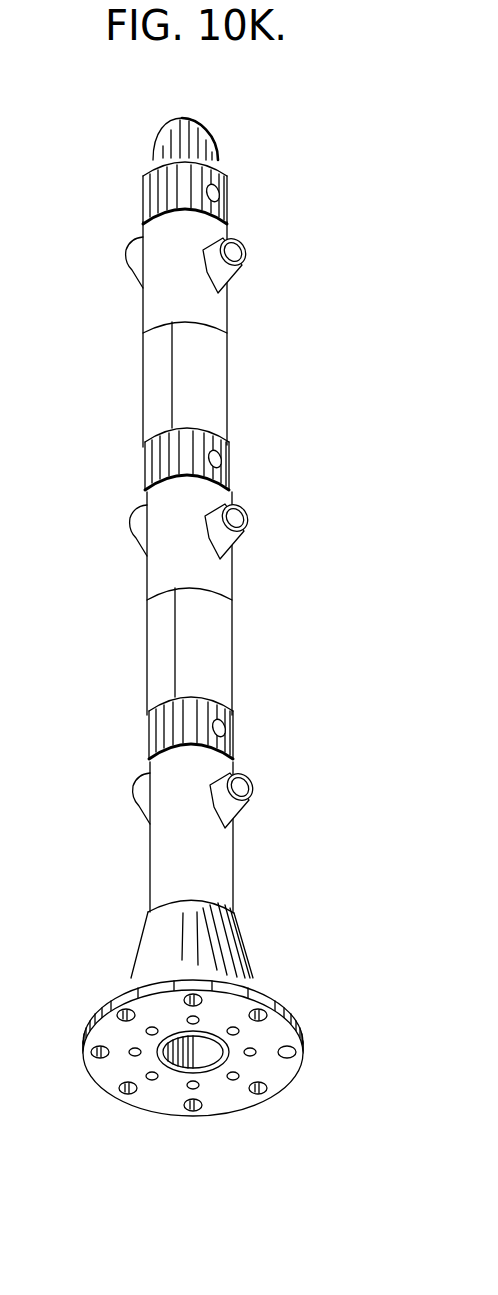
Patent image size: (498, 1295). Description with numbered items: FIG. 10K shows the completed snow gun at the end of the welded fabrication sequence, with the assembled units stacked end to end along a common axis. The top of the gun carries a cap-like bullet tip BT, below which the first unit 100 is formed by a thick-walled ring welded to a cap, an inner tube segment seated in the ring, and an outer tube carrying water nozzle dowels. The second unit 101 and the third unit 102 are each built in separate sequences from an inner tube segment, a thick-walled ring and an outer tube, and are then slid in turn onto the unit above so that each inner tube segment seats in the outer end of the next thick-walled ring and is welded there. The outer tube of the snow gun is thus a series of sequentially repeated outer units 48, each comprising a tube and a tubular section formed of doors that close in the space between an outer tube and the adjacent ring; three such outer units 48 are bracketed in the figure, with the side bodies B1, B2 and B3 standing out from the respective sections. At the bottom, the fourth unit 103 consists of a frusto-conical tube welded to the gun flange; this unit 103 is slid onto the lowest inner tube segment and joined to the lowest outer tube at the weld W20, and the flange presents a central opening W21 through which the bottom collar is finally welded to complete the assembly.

The bullet-shaped top cap BT is at (197, 133).
The unit 100 is at (248, 230).
The unit 101 is at (255, 502).
The unit 102 is at (252, 825).
The unit 103 is at (255, 963).
The first body section with eyelet port B1 is at (218, 303).
The second body section with eyelet port B2 is at (220, 570).
The third body section with eyelet port B3 is at (223, 853).
The outer unit 48 is at (127, 215).
The weld W20 is at (233, 913).
The central opening of base flange W21 is at (213, 1068).